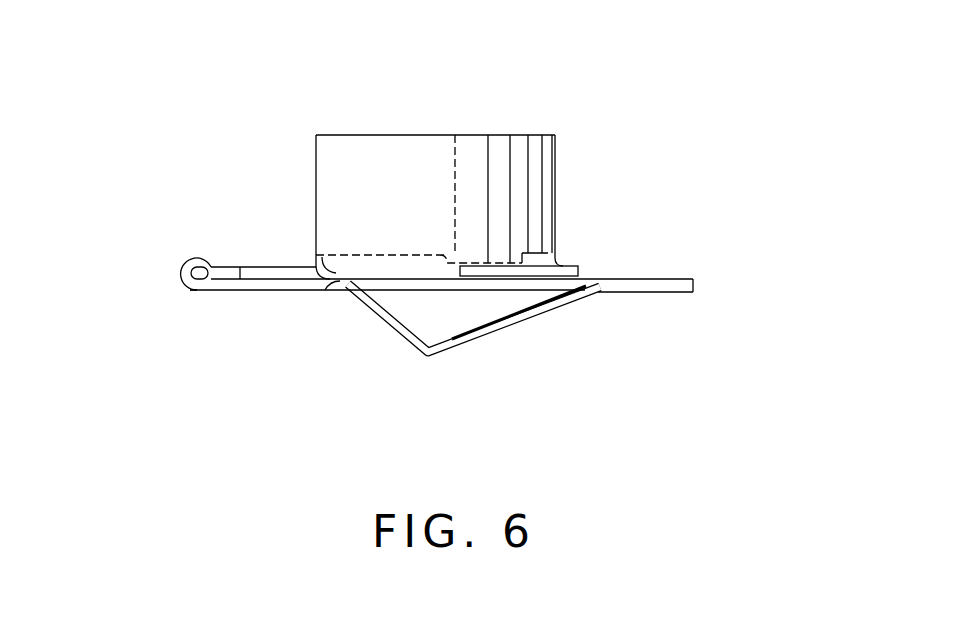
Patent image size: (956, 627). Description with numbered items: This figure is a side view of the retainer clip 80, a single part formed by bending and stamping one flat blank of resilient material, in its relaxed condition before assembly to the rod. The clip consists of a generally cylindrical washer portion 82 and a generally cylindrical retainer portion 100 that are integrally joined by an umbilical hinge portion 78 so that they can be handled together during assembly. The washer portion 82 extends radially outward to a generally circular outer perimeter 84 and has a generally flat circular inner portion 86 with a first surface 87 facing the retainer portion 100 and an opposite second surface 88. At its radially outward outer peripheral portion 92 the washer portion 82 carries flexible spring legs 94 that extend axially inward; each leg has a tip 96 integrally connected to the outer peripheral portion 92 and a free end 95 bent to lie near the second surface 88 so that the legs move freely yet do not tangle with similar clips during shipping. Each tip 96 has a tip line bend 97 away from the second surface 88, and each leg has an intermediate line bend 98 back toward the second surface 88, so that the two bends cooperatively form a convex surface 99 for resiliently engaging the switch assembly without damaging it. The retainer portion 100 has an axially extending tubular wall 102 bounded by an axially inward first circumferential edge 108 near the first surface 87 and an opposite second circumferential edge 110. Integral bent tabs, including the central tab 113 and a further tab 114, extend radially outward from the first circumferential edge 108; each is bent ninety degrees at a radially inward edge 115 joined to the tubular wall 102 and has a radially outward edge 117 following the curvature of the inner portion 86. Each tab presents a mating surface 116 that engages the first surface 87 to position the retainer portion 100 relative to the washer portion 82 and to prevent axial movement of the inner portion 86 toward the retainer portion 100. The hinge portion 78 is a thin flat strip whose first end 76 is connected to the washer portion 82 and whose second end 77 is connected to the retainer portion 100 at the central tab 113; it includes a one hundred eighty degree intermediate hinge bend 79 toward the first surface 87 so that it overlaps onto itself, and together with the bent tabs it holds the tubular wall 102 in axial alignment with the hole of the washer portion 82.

The first end 76 is at (187, 291).
The second end 77 is at (254, 270).
The hinge portion 78 is at (172, 256).
The intermediate hinge bend 79 is at (180, 276).
The retainer clip 80 is at (656, 118).
The washer portion 82 is at (706, 268).
The outer perimeter 84 is at (694, 286).
The inner portion 86 is at (391, 268).
The first surface 87 is at (388, 272).
The second surface 88 is at (408, 291).
The outer peripheral portion 92 is at (680, 278).
The flexible spring legs 94 is at (498, 351).
The free end 95 is at (327, 288).
The tip 96 is at (588, 293).
The tip line bend 97 is at (603, 278).
The intermediate line bend 98 is at (428, 362).
The convex surface 99 is at (447, 357).
The retainer portion 100 is at (436, 118).
The tubular wall 102 is at (332, 124).
The first circumferential edge 108 is at (558, 262).
The second circumferential edge 110 is at (552, 134).
The central tab 113 is at (237, 265).
The bent tab 114 is at (502, 280).
The radially inward edge 115 is at (302, 270).
The mating surface 116 is at (527, 280).
The radially outward edge 117 is at (238, 281).